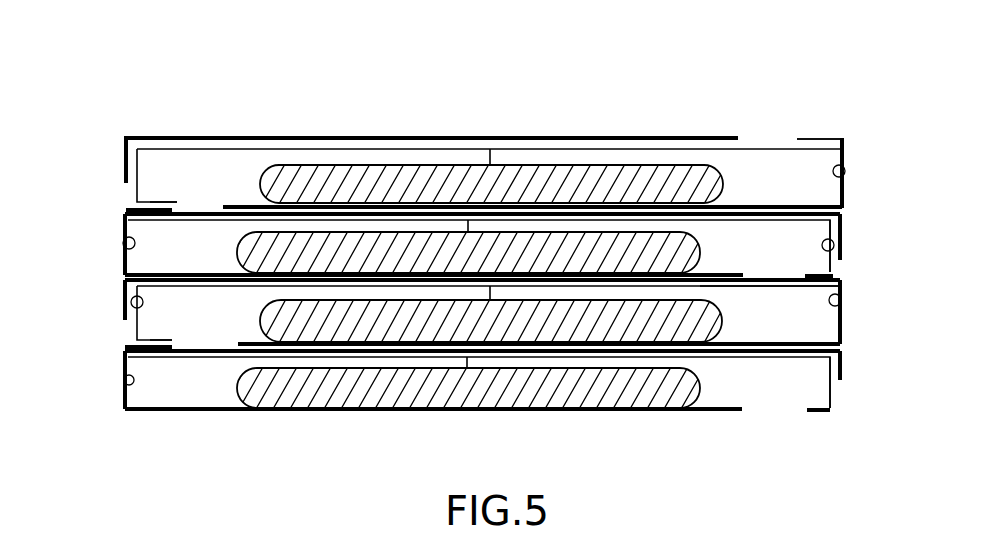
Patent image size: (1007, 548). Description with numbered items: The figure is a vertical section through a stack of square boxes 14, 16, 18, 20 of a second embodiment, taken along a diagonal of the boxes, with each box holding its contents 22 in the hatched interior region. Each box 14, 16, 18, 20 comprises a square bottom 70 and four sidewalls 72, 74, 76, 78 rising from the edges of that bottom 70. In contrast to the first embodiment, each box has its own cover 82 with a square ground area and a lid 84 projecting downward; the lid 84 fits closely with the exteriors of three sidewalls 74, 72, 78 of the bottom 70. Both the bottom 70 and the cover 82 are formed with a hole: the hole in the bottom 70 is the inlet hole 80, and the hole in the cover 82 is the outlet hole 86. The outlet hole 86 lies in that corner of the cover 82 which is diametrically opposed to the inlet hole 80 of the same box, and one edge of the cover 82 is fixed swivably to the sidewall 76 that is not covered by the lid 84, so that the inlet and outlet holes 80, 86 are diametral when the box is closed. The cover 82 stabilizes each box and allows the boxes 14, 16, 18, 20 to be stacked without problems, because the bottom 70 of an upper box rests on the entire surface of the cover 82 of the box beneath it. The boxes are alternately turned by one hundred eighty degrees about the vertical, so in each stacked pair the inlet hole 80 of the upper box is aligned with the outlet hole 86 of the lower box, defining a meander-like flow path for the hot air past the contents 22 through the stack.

The box 14 is at (650, 425).
The box 16 is at (858, 326).
The box 18 is at (102, 209).
The box 20 is at (217, 128).
The elongated cell element 22 is at (483, 286).
The bottom 70 is at (756, 207).
The sidewall 72 is at (842, 259).
The sidewall 74 is at (128, 243).
The sidewall 76 is at (845, 165).
The sidewall 78 is at (140, 176).
The inlet hole 80 is at (176, 202).
The cover 82 is at (486, 138).
The lid 84 is at (126, 162).
The outlet hole 86 is at (797, 139).